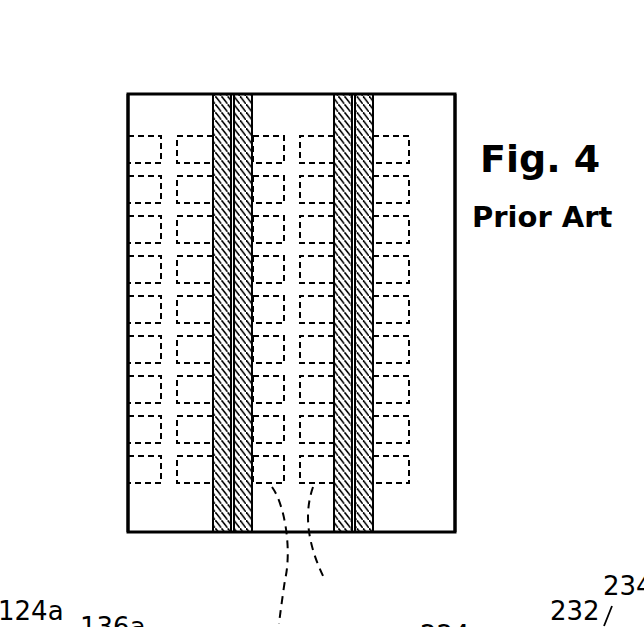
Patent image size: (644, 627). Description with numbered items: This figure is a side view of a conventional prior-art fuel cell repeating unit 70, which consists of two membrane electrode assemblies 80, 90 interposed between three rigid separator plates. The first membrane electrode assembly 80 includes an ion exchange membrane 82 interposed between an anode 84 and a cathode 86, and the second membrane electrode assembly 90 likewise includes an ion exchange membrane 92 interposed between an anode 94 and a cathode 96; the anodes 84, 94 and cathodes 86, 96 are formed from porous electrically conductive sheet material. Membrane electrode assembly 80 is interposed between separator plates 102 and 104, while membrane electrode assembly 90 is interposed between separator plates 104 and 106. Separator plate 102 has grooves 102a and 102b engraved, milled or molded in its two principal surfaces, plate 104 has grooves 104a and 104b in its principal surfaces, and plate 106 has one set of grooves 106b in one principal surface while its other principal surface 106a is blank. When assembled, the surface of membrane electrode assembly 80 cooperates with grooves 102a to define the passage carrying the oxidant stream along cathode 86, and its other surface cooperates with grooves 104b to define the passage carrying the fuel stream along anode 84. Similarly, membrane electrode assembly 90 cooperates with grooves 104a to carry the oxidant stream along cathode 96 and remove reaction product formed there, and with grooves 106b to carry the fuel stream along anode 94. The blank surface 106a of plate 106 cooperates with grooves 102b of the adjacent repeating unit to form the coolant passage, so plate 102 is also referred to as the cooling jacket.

The fuel cell repeating unit 70 is at (477, 100).
The membrane electrode assembly 80 is at (243, 295).
The ion exchange membrane 82 is at (243, 271).
The anode 84 is at (242, 93).
The cathode 86 is at (217, 93).
The membrane electrode assembly 90 is at (398, 302).
The ion exchange membrane 92 is at (398, 277).
The anode 94 is at (368, 93).
The cathode 96 is at (370, 58).
The separator plate 102 is at (146, 510).
The grooves 102a is at (180, 136).
The grooves 102b is at (127, 308).
The separator plate 104 is at (268, 522).
The grooves 104a is at (333, 552).
The grooves 104b is at (303, 557).
The separator plate 106 is at (443, 507).
The blank principal surface 106a is at (456, 397).
The grooves 106b is at (400, 320).